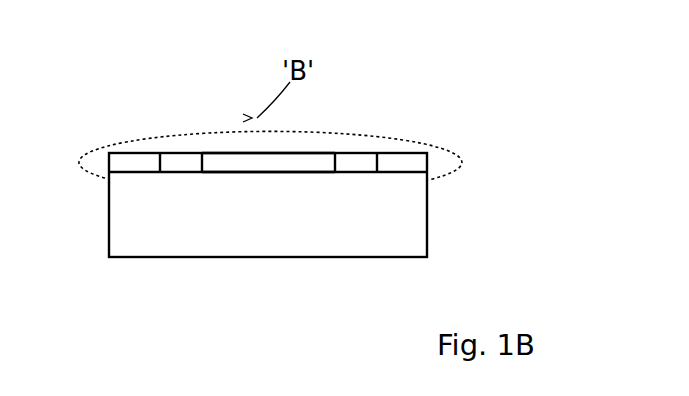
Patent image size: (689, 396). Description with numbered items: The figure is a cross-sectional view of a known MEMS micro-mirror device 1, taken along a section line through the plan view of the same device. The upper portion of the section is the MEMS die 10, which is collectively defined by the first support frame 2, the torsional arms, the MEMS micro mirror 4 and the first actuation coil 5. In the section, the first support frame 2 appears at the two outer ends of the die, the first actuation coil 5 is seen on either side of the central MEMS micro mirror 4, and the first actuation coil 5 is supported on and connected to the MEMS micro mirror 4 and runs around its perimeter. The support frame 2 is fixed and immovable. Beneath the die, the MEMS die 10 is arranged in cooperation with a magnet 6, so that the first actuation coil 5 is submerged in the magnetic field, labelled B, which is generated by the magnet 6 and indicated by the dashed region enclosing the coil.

The MEMS micro-mirror device 1 is at (444, 213).
The first support frame 2 is at (130, 162).
The MEMS micro mirror 4 is at (272, 164).
The first actuation coil 5 is at (218, 160).
The magnet 6 is at (128, 244).
The MEMS die 10 is at (242, 157).